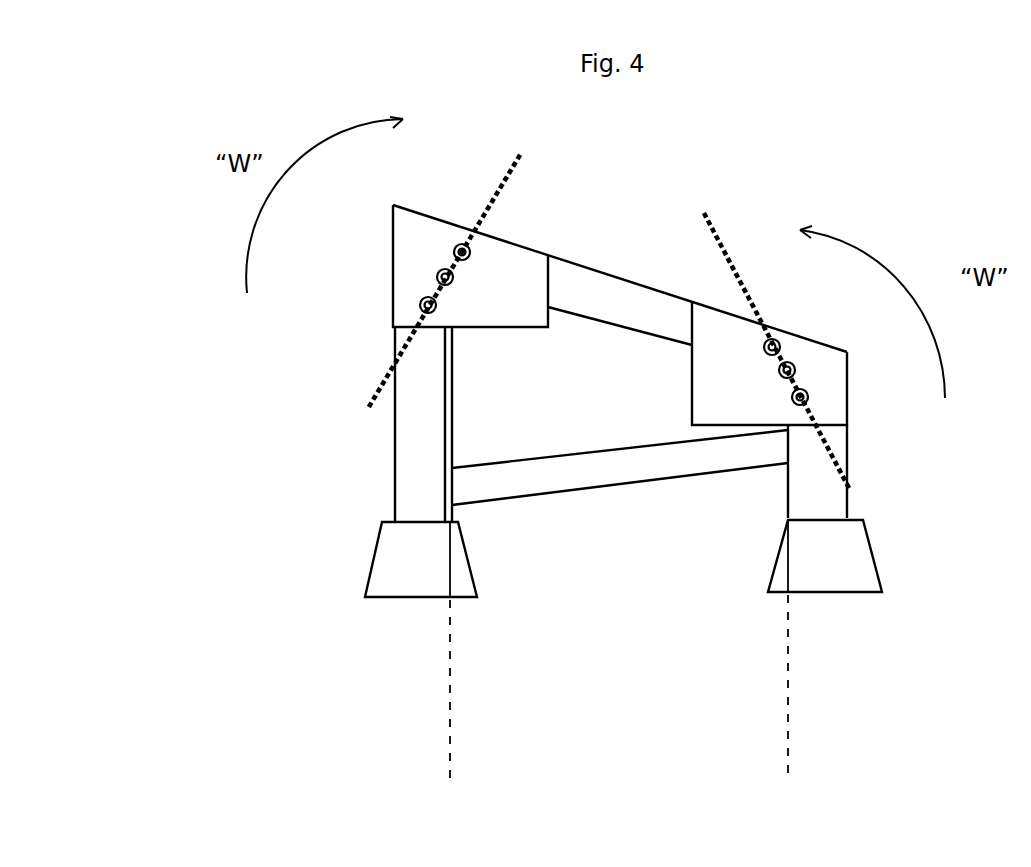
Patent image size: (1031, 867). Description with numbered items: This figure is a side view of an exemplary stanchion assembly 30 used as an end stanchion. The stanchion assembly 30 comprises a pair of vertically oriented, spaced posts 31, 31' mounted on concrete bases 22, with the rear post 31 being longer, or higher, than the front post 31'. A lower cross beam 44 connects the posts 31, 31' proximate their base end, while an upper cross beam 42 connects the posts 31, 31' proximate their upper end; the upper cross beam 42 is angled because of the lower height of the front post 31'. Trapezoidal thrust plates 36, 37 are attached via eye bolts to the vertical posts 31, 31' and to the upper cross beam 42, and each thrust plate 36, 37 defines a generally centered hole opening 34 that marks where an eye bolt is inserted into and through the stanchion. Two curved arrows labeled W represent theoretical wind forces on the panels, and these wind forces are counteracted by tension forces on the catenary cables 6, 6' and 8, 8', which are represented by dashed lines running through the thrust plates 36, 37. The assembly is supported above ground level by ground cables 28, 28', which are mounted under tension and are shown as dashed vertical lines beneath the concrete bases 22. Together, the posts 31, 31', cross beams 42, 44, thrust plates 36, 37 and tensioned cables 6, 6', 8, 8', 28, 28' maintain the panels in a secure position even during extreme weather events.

The catenary cable 6 is at (462, 280).
The catenary cable 6' is at (482, 343).
The catenary cable 8 is at (771, 352).
The catenary cable 8' is at (705, 410).
The concrete base 22 is at (437, 574).
The ground cable 28 is at (755, 648).
The ground cable 28' is at (415, 650).
The stanchion assembly 30 is at (274, 600).
The rear post 31 is at (423, 424).
The front post 31' is at (817, 471).
The hole opening 34 is at (457, 247).
The thrust plate 36 is at (519, 302).
The thrust plate 37 is at (741, 394).
The upper cross beam 42 is at (644, 316).
The lower cross beam 44 is at (599, 489).